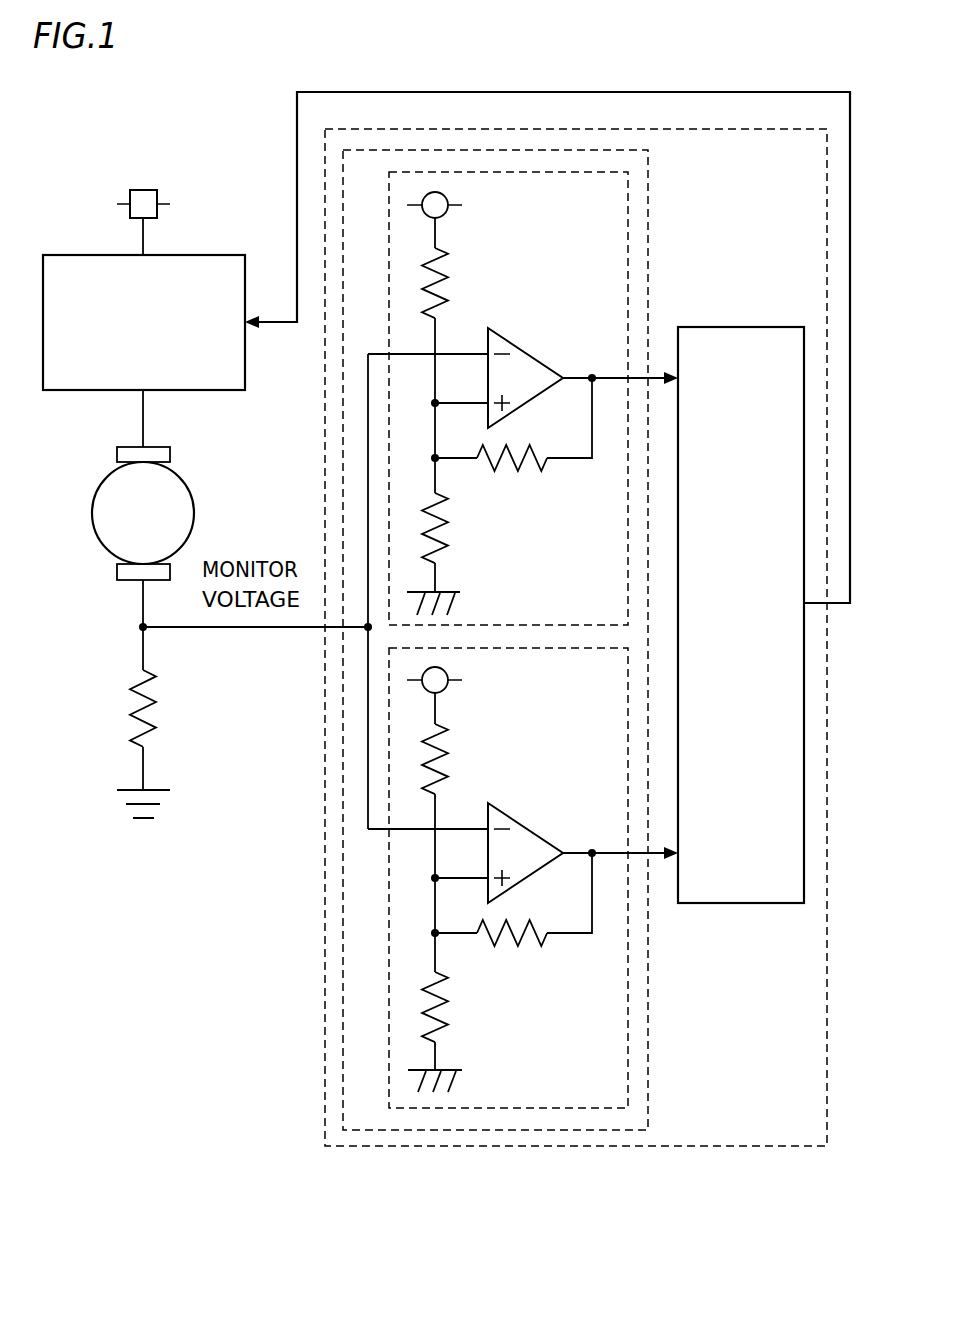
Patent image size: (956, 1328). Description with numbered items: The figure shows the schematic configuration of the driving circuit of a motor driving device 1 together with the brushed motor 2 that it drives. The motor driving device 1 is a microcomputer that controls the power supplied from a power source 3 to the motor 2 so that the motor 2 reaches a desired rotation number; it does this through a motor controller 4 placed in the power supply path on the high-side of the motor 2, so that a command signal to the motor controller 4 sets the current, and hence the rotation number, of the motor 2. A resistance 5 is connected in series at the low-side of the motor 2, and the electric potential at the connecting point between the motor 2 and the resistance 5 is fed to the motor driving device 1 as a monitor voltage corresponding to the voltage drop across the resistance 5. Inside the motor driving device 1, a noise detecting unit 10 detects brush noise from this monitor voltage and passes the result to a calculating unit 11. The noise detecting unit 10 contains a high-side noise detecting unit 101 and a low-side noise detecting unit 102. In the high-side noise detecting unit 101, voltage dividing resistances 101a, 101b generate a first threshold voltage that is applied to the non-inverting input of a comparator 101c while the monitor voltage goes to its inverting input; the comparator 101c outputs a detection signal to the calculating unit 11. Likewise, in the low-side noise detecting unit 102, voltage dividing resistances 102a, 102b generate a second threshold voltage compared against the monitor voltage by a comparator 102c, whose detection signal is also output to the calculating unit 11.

The motor driving device 1 is at (828, 916).
The motor 2 is at (183, 478).
The power source 3 is at (148, 190).
The motor controller 4 is at (208, 255).
The resistance 5 is at (153, 690).
The noise detecting unit 10 is at (648, 164).
The calculating unit 11 is at (757, 327).
The high-side noise detecting unit 101 is at (628, 213).
The voltage dividing resistance 101a is at (443, 262).
The voltage dividing resistance 101b is at (441, 506).
The comparator 101c is at (542, 358).
The low-side noise detecting unit 102 is at (628, 997).
The voltage dividing resistance 102a is at (441, 737).
The voltage dividing resistance 102b is at (443, 983).
The comparator 102c is at (543, 833).